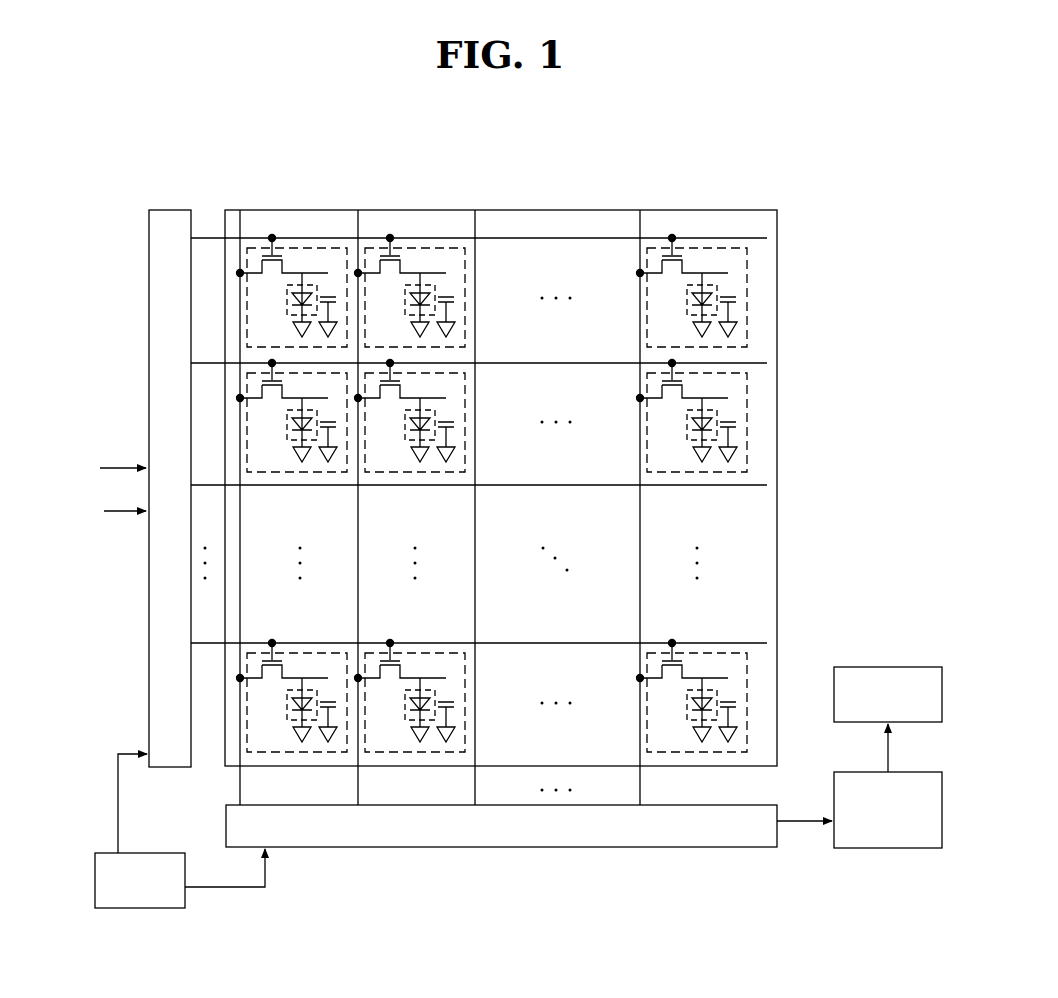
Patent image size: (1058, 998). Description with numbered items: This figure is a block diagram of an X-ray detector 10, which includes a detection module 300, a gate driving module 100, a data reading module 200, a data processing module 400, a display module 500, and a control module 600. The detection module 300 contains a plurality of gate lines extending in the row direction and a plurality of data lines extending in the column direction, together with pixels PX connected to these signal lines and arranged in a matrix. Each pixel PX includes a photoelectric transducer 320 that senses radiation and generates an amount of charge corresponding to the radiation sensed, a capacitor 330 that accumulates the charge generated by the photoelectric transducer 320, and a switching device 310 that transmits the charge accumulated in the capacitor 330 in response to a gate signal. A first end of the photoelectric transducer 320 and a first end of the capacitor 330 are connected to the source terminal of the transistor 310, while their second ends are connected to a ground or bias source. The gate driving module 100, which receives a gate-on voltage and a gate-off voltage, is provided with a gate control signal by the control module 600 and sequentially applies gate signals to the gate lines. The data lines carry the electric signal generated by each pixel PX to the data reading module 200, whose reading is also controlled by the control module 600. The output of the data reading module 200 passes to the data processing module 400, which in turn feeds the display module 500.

The X-ray detector 10 is at (770, 163).
The gate driving module 100 is at (148, 697).
The data reading module 200 is at (665, 848).
The detection module 300 is at (777, 297).
The switching device 310 is at (289, 256).
The photoelectric transducer 320 is at (288, 306).
The capacitor 330 is at (334, 294).
The data processing module 400 is at (885, 849).
The display module 500 is at (882, 666).
The control module 600 is at (151, 852).
The pixel PX is at (315, 247).